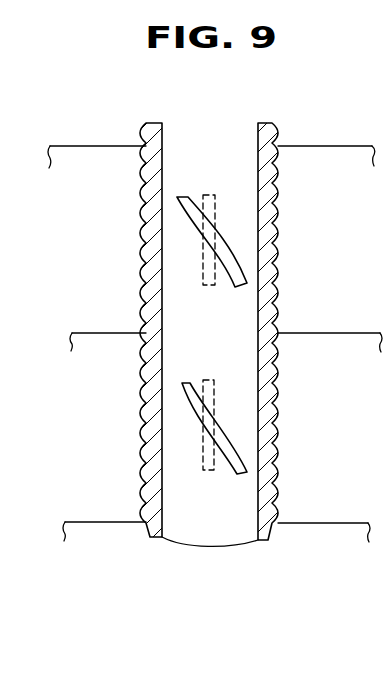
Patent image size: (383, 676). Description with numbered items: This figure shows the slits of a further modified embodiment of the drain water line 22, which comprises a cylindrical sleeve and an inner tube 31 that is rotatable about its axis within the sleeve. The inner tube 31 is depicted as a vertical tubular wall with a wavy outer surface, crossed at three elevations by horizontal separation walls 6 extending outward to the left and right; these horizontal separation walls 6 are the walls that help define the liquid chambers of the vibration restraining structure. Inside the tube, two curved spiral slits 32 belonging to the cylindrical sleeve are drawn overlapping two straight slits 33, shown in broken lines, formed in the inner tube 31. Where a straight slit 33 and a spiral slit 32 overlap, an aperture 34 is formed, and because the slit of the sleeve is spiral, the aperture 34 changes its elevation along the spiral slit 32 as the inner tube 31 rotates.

The drain water line 22 is at (180, 321).
The inner tube 31 is at (266, 124).
The horizontal separation wall 6 is at (344, 146).
The spiral slit 32 is at (229, 255).
The straight slit 33 is at (209, 195).
The aperture 34 is at (208, 236).